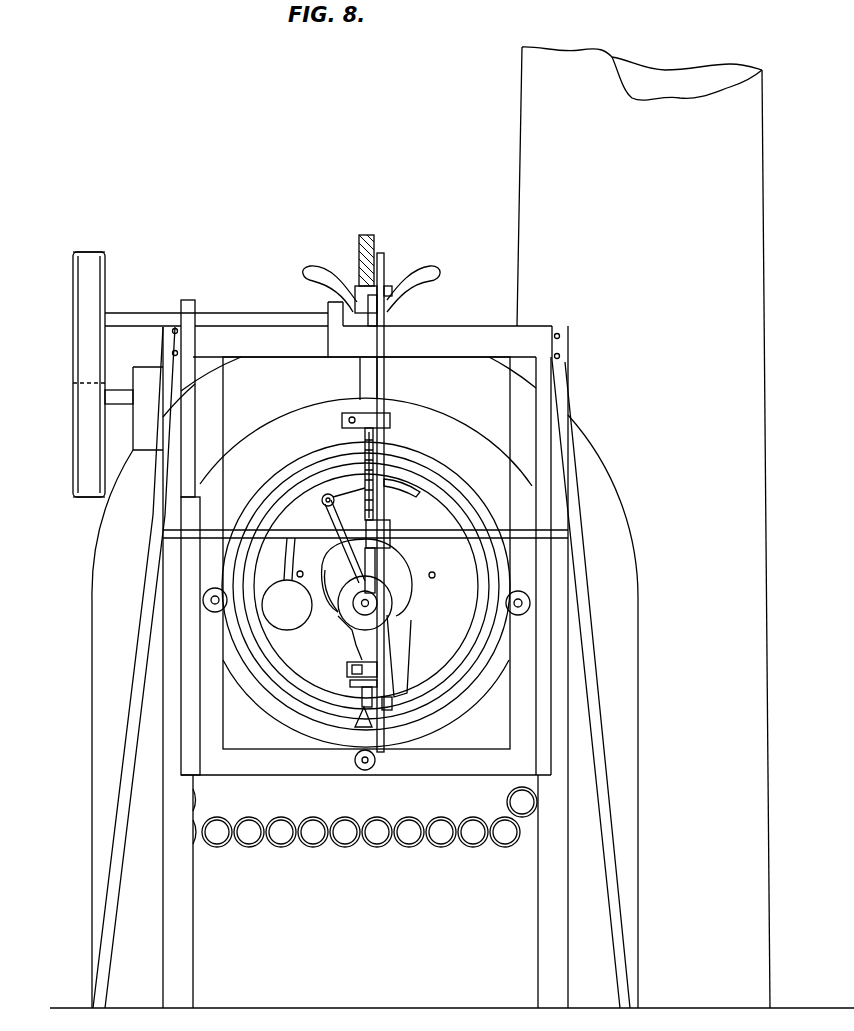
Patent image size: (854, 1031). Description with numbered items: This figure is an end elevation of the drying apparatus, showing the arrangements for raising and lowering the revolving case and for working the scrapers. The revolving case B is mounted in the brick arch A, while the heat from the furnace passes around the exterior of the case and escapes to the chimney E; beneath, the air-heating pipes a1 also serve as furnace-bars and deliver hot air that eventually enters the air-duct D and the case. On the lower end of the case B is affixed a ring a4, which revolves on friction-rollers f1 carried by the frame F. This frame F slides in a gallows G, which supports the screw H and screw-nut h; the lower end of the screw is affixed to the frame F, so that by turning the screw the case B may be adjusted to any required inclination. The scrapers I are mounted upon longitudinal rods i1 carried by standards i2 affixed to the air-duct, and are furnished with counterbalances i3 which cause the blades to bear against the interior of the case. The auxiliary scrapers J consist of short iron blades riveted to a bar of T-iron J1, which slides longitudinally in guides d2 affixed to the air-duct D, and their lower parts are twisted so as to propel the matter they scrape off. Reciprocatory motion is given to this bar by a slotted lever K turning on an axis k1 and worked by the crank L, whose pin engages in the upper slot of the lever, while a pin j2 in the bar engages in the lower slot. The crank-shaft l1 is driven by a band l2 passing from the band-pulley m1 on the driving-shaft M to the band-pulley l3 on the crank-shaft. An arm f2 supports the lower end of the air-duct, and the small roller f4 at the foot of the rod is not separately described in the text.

The crank-shaft l1 is at (216, 315).
The band l2 is at (89, 374).
The band-pulley l3 is at (78, 278).
The band-pulley m1 is at (76, 451).
The driving-shaft M is at (134, 408).
The screw H is at (367, 255).
The crank L is at (371, 289).
The screw-nut h is at (382, 310).
The gallows G is at (372, 341).
The brick arch A is at (337, 378).
The slotted lever K is at (385, 383).
The chimney E is at (643, 527).
The scrapers I is at (402, 497).
The longitudinal rods i1 is at (343, 502).
The standards i2 is at (336, 527).
The counterbalances i3 is at (287, 584).
The axis k1 is at (395, 534).
The air-duct D is at (367, 618).
The arm f2 is at (355, 609).
The revolving case B is at (486, 614).
The ring a4 is at (270, 692).
The bar of T-iron J1 is at (351, 669).
The guides d2 is at (355, 674).
The auxiliary scrapers J is at (362, 720).
The pin j2 is at (392, 707).
The friction-rollers f1 is at (518, 622).
The lower roller f4 is at (372, 764).
The frame F is at (366, 765).
The air-heating pipes a1 is at (507, 800).